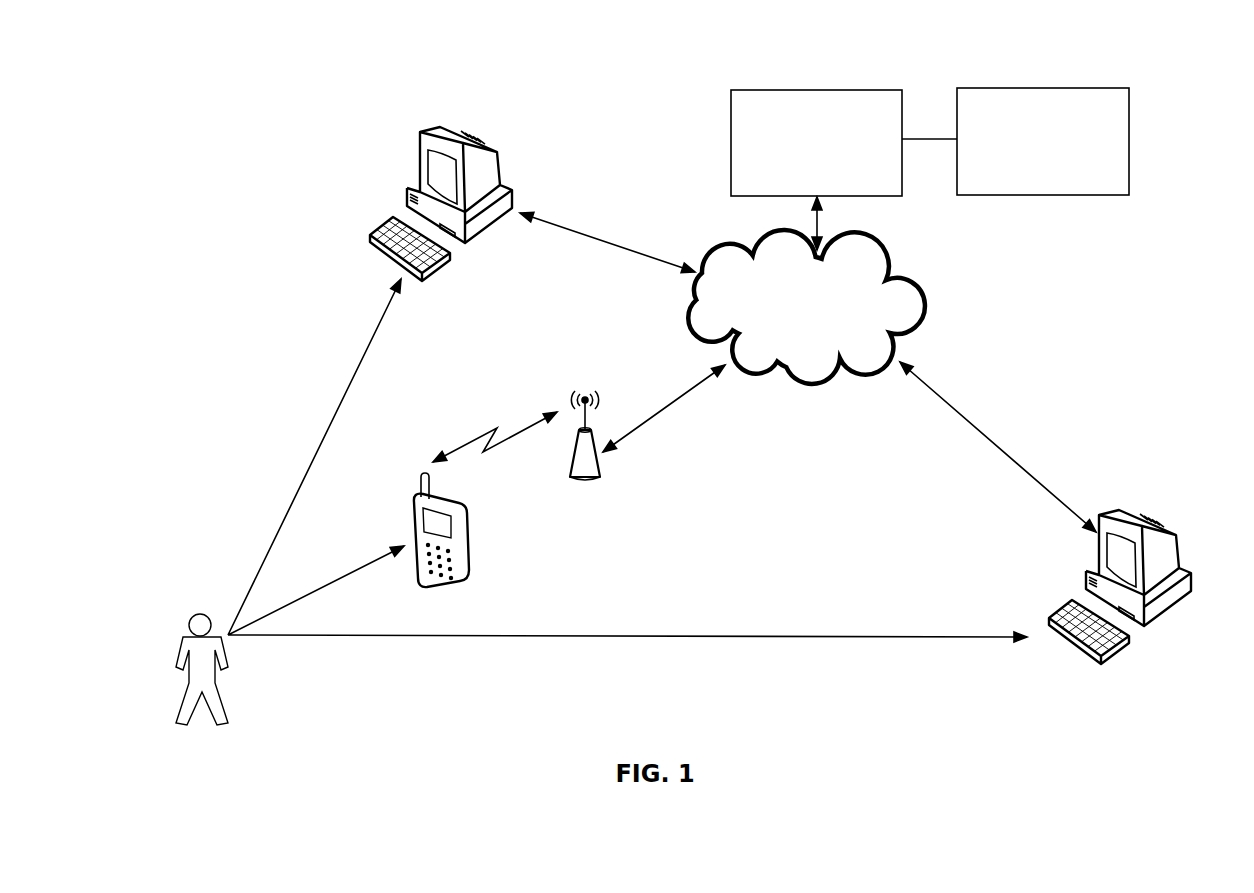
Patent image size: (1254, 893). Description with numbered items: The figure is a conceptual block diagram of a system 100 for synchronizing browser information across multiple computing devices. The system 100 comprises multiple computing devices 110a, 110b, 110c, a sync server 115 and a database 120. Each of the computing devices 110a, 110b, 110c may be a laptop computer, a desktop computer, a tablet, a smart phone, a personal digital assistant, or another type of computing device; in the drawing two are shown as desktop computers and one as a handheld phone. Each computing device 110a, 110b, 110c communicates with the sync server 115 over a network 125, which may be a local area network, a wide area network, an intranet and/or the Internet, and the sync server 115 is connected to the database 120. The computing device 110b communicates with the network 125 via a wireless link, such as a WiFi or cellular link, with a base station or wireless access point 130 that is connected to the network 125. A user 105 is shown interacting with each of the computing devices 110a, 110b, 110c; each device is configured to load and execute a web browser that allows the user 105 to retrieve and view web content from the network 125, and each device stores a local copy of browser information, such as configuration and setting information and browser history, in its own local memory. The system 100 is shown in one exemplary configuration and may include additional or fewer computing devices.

The system 100 is at (1159, 69).
The user 105 is at (200, 613).
The computing device 110a is at (470, 130).
The computing device 110b is at (470, 534).
The computing device 110c is at (1133, 505).
The sync server 115 is at (802, 165).
The database 120 is at (1028, 165).
The network 125 is at (793, 331).
The base station or wireless access point 130 is at (598, 466).